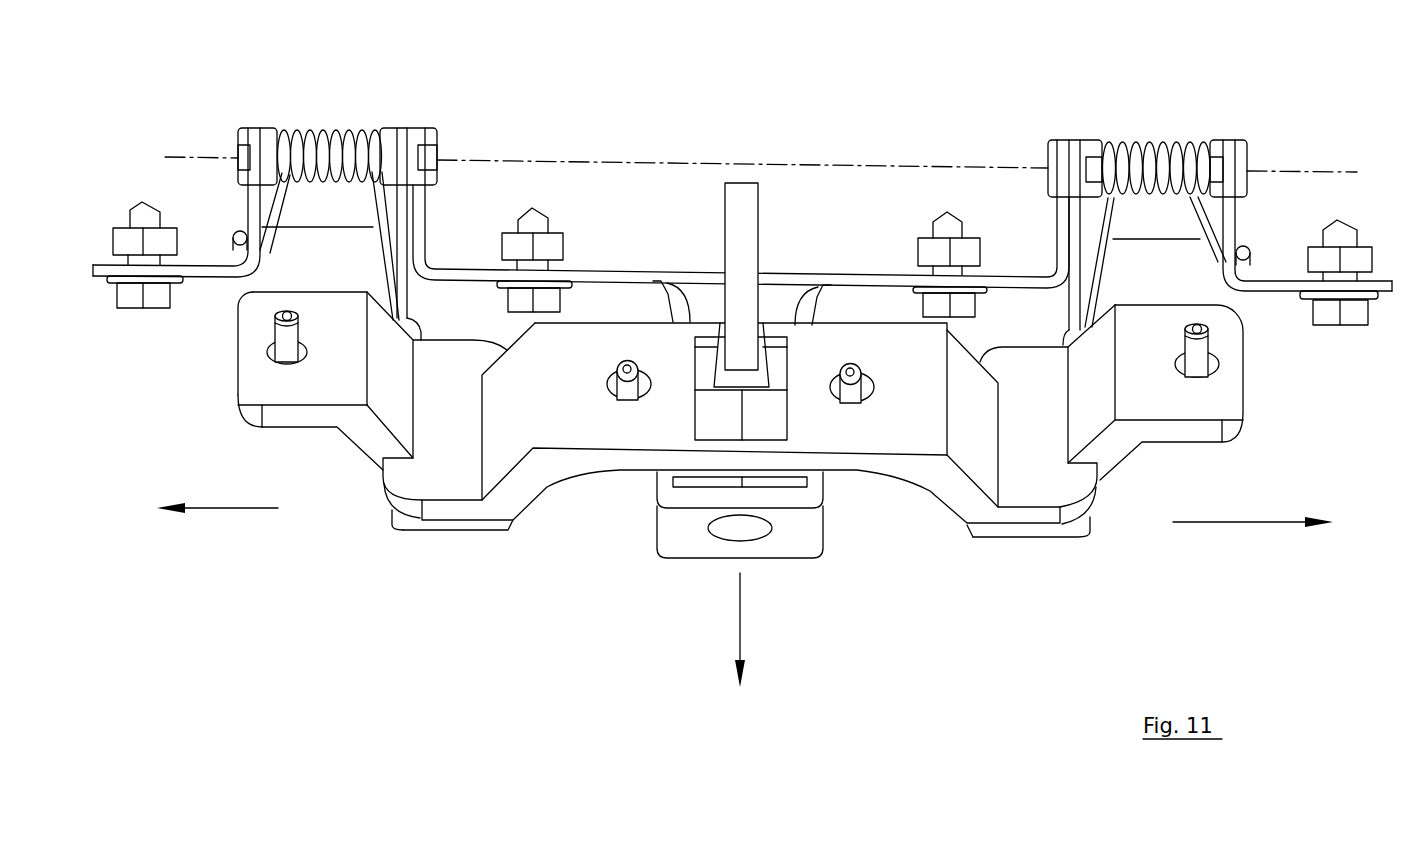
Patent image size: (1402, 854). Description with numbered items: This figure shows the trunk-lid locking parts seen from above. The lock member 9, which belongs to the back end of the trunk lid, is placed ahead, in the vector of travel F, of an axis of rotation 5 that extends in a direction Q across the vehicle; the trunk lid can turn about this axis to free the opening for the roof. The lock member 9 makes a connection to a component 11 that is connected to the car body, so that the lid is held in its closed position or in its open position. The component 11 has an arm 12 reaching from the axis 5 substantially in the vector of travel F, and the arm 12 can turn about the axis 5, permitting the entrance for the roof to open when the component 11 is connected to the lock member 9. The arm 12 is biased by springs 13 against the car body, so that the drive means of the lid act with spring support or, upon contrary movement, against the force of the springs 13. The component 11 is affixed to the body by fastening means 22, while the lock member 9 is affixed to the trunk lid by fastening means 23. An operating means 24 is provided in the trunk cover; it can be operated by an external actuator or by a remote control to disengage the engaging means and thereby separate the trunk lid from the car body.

The axis of rotation 5 is at (1277, 172).
The lock member 9 is at (447, 424).
The component 11 is at (842, 280).
The arm 12 is at (407, 287).
The springs 13 is at (383, 268).
The fastening means 22 is at (140, 220).
The fastening means 23 is at (285, 340).
The operating means 24 is at (740, 207).
The direction across the vehicle Q is at (228, 508).
The vector of travel F is at (740, 615).